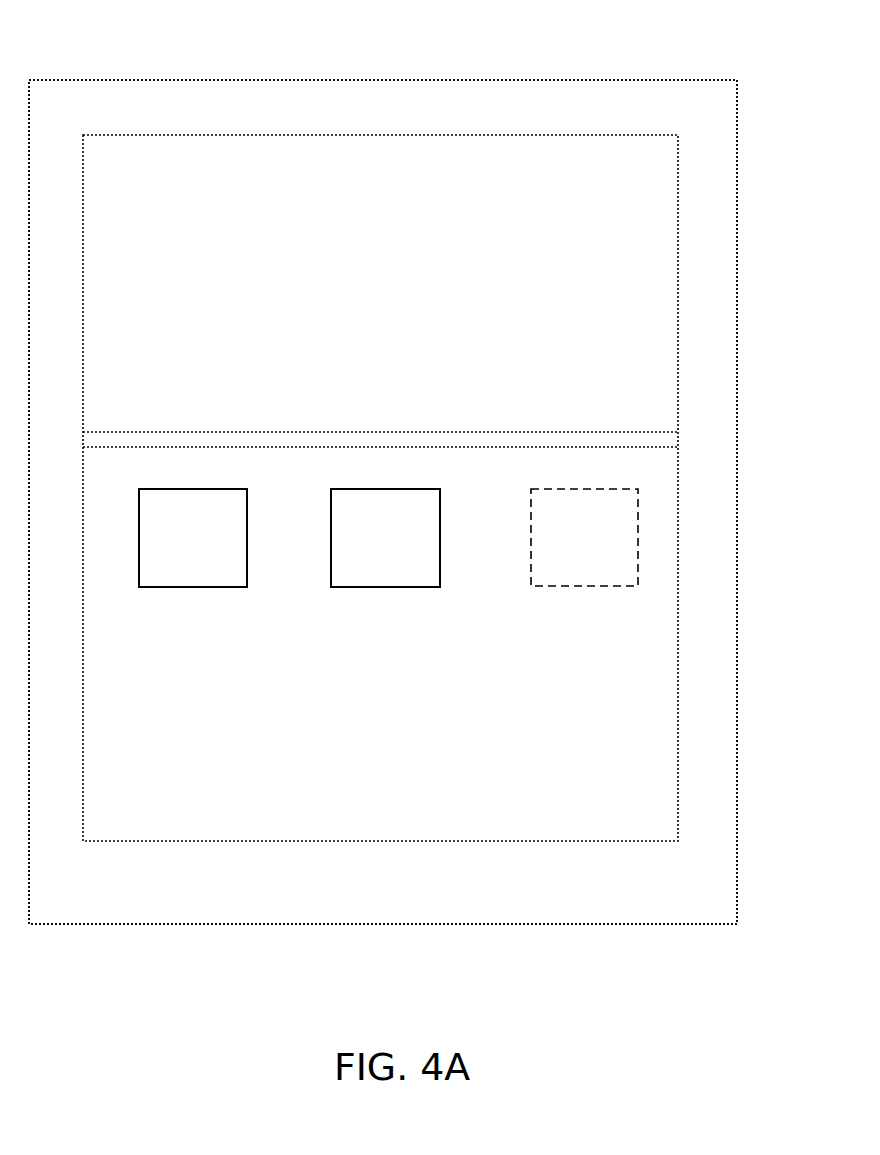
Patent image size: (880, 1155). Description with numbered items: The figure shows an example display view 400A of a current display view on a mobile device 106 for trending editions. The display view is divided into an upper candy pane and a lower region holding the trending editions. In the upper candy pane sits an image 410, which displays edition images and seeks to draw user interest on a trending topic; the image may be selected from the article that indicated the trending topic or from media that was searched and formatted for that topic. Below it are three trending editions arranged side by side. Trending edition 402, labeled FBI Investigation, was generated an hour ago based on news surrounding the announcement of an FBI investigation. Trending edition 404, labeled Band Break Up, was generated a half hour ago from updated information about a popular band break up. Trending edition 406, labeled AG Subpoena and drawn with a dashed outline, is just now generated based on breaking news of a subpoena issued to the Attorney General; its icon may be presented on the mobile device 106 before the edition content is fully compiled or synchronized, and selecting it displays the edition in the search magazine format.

The display view 400A is at (85, 31).
The mobile device 106 is at (692, 80).
The image 410 is at (636, 395).
The trending edition 402 is at (205, 482).
The trending edition 404 is at (412, 482).
The trending edition 406 is at (601, 482).